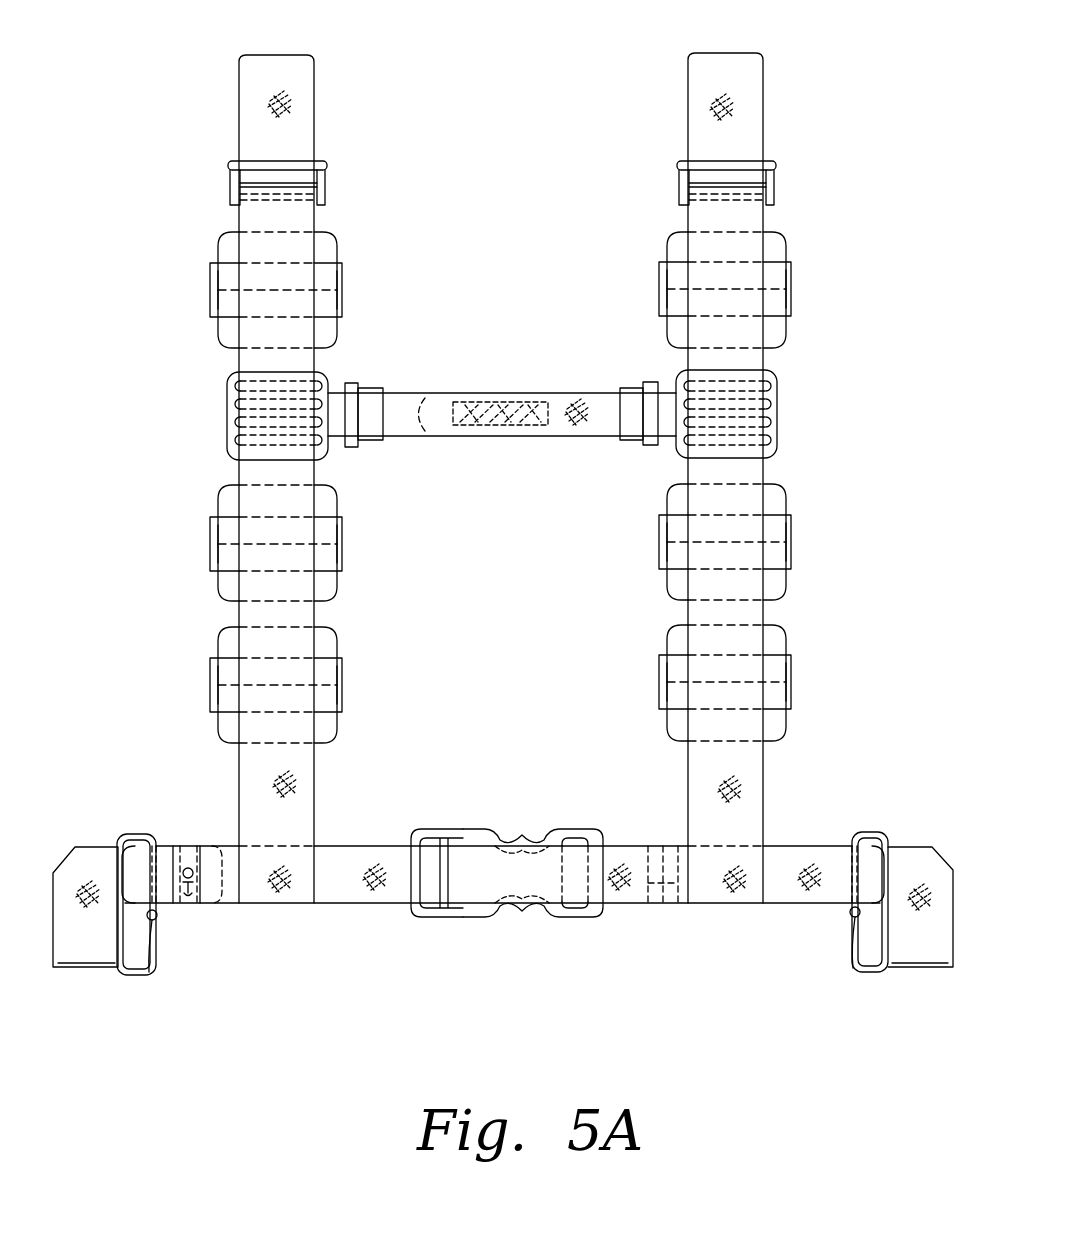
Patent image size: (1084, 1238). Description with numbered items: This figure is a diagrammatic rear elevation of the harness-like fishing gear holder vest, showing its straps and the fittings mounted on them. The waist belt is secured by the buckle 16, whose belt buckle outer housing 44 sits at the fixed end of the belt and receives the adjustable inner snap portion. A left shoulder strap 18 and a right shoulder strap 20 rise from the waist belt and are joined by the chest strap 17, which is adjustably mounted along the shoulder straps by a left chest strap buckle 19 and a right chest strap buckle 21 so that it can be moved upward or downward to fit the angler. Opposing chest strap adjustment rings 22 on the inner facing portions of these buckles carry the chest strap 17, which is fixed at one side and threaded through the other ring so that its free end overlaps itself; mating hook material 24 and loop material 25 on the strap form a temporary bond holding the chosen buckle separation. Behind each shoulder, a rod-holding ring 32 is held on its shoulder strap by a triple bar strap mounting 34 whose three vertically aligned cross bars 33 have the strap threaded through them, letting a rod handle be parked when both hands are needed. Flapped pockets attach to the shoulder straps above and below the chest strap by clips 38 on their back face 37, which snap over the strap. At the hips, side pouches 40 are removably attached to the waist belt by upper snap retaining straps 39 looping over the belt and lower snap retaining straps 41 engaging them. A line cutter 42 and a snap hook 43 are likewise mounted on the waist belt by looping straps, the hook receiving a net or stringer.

The buckle 16 is at (578, 918).
The chest strap 17 is at (502, 423).
The left shoulder strap 18 is at (310, 76).
The left chest strap buckle 19 is at (228, 385).
The right shoulder strap 20 is at (752, 74).
The right chest strap buckle 21 is at (780, 410).
The chest strap adjustment rings 22 is at (378, 388).
The hook material 24 is at (509, 382).
The loop material 25 is at (495, 437).
The rod-holding ring 32 is at (511, 153).
The cross bars 33 is at (262, 186).
The triple bar strap mounting 34 is at (327, 195).
The back face 37 is at (335, 243).
The clips 38 is at (345, 291).
The upper snap retaining straps 39 is at (148, 836).
The side pouches 40 is at (90, 855).
The lower snap retaining straps 41 is at (152, 975).
The line cutter 42 is at (665, 905).
The snap hook 43 is at (188, 890).
The belt buckle outer housing 44 is at (483, 912).